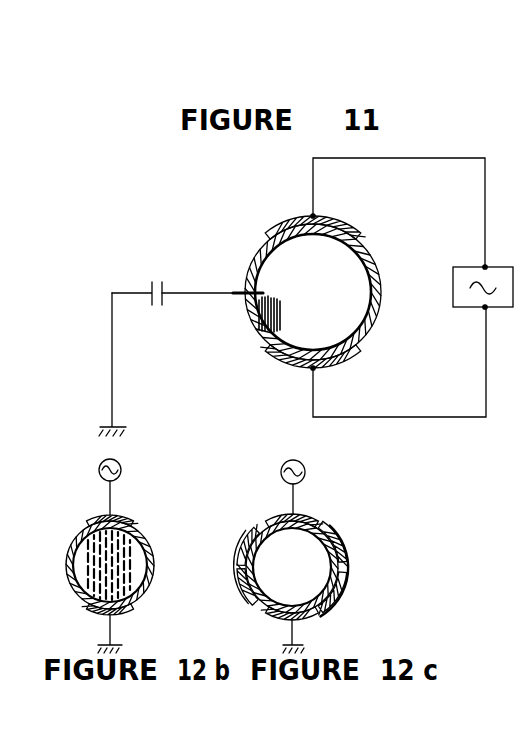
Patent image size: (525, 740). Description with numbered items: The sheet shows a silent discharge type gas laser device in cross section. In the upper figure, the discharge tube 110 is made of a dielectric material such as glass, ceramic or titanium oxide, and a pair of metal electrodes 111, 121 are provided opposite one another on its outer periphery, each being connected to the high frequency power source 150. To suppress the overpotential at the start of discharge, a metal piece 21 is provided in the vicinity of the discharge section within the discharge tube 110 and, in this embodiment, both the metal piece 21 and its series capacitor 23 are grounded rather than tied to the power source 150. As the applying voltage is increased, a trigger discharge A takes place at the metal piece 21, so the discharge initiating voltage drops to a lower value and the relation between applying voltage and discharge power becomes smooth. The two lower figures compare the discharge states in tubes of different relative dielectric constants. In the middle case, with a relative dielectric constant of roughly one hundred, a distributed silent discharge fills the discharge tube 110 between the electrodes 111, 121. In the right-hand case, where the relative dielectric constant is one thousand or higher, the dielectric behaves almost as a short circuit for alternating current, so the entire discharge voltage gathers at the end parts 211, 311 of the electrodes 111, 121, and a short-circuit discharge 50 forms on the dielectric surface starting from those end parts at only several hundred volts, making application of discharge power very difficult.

In FIG. 11, the discharge tube 110 is at (380, 283).
In FIG. 12B, the discharge tube 110 is at (73, 588).
In FIG. 12C, the discharge tube 110 is at (240, 583).
In FIG. 11, the metal electrode 111 is at (357, 353).
In FIG. 12B, the metal electrode 111 is at (125, 612).
In FIG. 12C, the metal electrode 111 is at (303, 618).
In FIG. 11, the metal electrode 121 is at (346, 227).
In FIG. 12B, the metal electrode 121 is at (105, 520).
In FIG. 12C, the metal electrode 121 is at (302, 520).
In FIG. 11, the high frequency power source 150 is at (462, 308).
In FIG. 11, the metal piece 21 is at (238, 297).
In FIG. 11, the capacitor 23 is at (160, 277).
In FIG. 11, the trigger discharge A is at (268, 320).
In FIG. 12C, the end part of electrode 211 is at (265, 522).
In FIG. 12C, the end part of electrode 311 is at (271, 612).
In FIG. 12C, the short-circuit discharge 50 is at (342, 548).